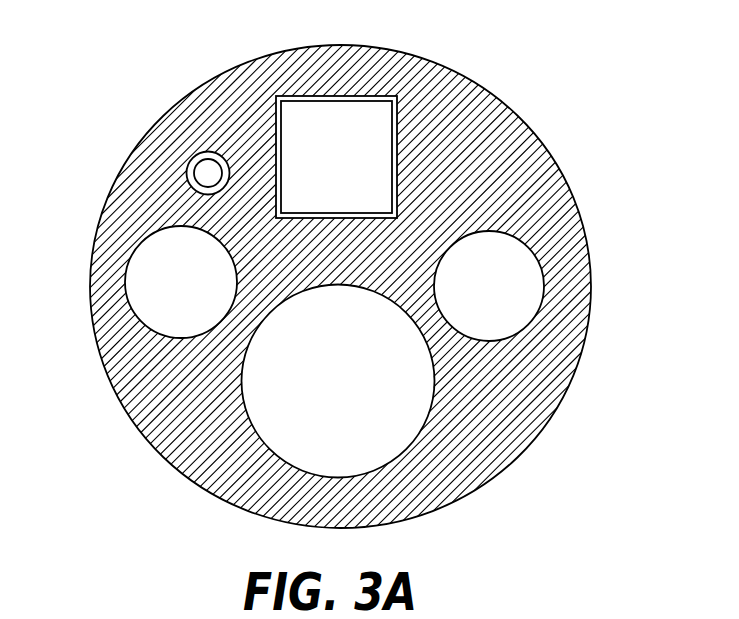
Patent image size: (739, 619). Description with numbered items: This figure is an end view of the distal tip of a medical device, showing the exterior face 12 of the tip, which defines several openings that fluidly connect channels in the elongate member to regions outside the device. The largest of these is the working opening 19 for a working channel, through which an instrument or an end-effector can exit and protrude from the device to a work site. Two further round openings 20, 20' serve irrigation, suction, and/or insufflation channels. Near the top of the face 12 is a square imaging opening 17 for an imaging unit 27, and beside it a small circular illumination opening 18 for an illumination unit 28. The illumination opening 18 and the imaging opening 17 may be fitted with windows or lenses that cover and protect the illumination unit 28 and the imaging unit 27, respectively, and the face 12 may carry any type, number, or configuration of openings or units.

The exterior face 12 is at (148, 410).
The imaging opening 17 is at (395, 122).
The illumination opening 18 is at (186, 181).
The working opening 19 is at (383, 453).
The opening 20 is at (144, 289).
The opening 20' is at (543, 286).
The imaging unit 27 is at (372, 125).
The illumination unit 28 is at (205, 168).